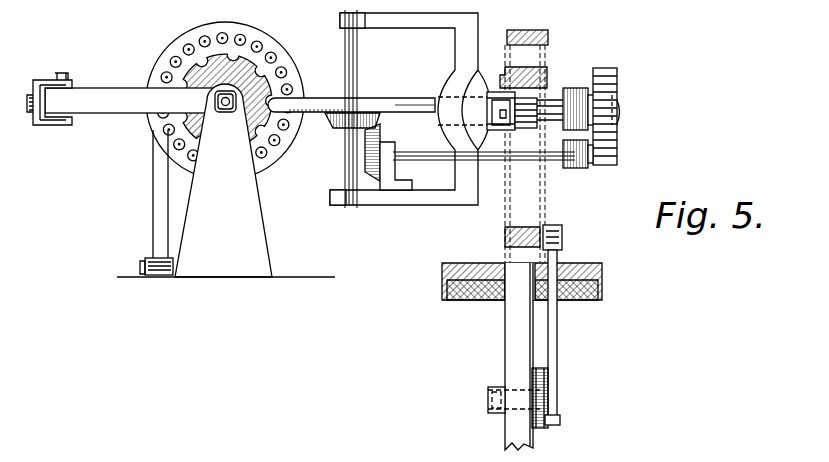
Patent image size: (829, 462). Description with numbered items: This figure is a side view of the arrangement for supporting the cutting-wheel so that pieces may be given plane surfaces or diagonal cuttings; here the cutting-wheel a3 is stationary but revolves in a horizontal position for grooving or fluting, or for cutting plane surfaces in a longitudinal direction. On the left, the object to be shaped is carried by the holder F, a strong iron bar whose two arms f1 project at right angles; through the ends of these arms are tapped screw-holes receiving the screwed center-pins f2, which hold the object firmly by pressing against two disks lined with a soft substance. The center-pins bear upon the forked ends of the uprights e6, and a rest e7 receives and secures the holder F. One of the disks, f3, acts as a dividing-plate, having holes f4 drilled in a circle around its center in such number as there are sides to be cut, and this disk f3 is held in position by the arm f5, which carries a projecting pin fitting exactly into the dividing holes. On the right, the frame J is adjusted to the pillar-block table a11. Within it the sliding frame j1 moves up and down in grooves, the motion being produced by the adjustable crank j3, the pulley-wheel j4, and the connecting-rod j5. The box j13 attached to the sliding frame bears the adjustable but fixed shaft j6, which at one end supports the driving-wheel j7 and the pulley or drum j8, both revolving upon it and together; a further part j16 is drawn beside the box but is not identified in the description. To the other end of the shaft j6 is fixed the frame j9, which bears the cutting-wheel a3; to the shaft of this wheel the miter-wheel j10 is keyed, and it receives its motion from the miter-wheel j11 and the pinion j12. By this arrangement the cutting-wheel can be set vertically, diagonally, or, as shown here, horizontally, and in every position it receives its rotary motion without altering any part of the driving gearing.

The disk f3 is at (225, 94).
The holes f4 is at (225, 91).
The cutting-wheel a3 is at (351, 96).
The arms f1 is at (131, 101).
The holder F is at (52, 99).
The rest e7 is at (39, 122).
The uprights e6 is at (226, 180).
The screwed center-pins f2 is at (225, 115).
The arm f5 is at (150, 202).
The frame j9 is at (410, 109).
The miter-wheel j10 is at (341, 109).
The miter-wheel j11 is at (388, 156).
The frame J is at (506, 165).
The sliding frame j1 is at (515, 153).
The box j13 is at (498, 118).
The sleeve j16 is at (539, 122).
The driving-wheel j7 is at (579, 97).
The pulley or drum j8 is at (606, 104).
The shaft j6 is at (622, 110).
The pinion j12 is at (574, 166).
The pillar-block table a11 is at (502, 356).
The connecting-rod j5 is at (556, 322).
The pulley-wheel j4 is at (518, 388).
The adjustable crank j3 is at (557, 425).